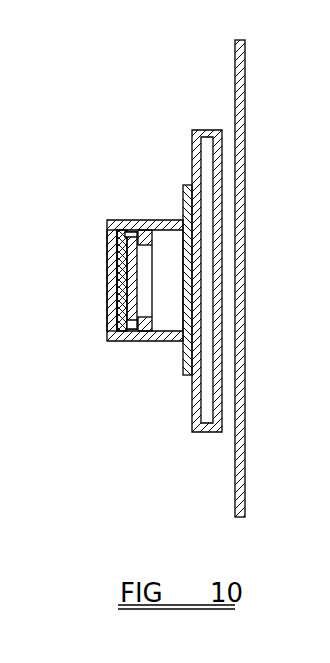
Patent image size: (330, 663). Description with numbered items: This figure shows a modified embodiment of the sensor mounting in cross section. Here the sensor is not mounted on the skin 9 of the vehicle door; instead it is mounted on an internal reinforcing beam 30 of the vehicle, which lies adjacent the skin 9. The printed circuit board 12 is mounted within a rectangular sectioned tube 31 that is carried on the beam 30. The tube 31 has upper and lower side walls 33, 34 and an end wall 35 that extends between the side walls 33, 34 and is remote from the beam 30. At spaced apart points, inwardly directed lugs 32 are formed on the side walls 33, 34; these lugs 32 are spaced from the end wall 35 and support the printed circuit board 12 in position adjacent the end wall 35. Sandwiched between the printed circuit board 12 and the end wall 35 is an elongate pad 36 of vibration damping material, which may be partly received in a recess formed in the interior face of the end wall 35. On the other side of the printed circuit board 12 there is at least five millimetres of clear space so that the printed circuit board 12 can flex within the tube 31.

The skin 9 is at (246, 103).
The internal reinforcing beam 30 is at (192, 137).
The rectangular sectioned tube 31 is at (134, 219).
The inwardly directed lugs 32 is at (150, 220).
The upper side wall 33 is at (171, 341).
The lower side wall 34 is at (170, 220).
The end wall 35 is at (115, 270).
The elongate pad of vibration damping material 36 is at (122, 283).
The printed circuit board 12 is at (137, 297).